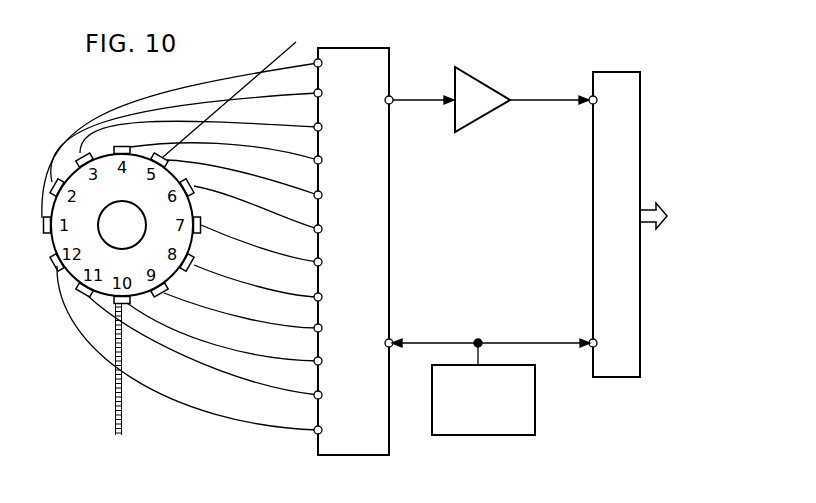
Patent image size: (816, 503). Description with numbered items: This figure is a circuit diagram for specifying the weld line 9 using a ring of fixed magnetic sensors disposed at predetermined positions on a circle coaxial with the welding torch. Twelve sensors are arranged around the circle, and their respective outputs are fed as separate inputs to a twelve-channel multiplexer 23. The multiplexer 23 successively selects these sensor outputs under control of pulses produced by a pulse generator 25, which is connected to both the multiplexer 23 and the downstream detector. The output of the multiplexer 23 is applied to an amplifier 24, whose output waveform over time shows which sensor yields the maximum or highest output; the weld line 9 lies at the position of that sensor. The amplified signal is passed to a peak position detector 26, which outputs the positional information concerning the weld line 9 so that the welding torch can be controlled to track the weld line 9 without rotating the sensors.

The weld line 9 is at (279, 56).
The multiplexer 23 is at (364, 48).
The amplifier 24 is at (496, 81).
The pulse generator 25 is at (536, 419).
The peak position detector 26 is at (592, 166).